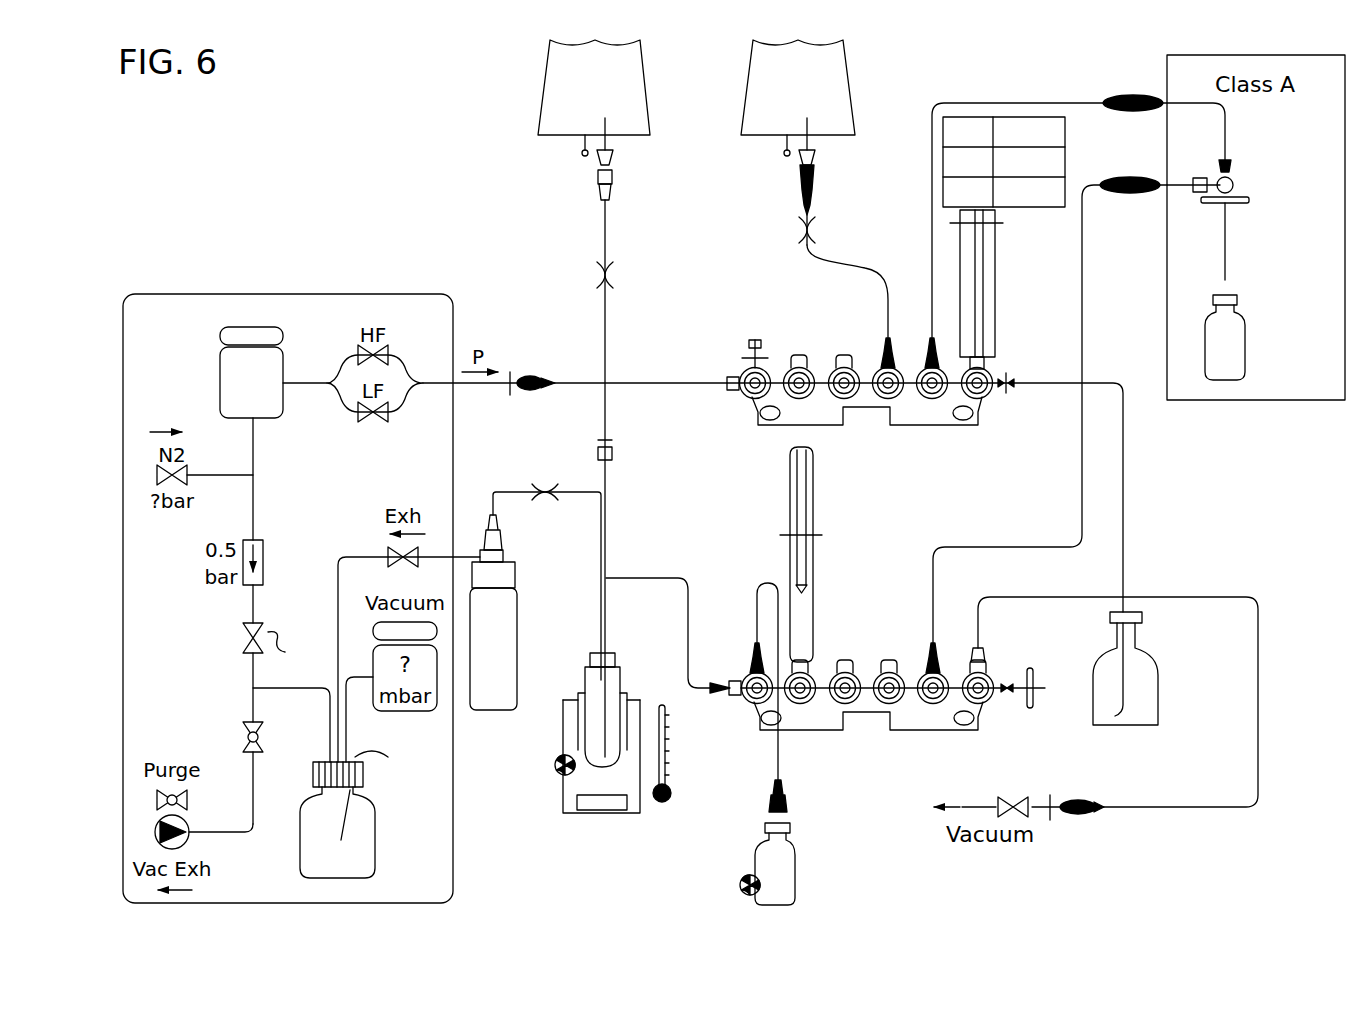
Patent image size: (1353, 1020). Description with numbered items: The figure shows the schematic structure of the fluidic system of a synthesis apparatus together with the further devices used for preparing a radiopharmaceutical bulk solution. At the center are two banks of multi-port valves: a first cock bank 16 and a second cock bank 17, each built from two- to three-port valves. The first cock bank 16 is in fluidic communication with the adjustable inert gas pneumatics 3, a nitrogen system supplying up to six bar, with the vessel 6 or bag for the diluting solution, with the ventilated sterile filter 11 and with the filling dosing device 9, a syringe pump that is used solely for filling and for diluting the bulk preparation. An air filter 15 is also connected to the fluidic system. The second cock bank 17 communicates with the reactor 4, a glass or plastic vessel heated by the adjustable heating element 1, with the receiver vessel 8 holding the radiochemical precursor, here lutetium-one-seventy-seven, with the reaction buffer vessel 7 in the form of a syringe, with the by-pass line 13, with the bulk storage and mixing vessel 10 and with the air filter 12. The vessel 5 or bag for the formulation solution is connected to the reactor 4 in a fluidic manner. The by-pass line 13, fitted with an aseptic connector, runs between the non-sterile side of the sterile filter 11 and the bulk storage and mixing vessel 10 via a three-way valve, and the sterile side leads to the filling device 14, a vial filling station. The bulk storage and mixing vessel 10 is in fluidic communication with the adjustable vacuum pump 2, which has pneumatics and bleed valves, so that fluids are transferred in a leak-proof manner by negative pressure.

The heating element 1 is at (546, 824).
The vacuum pump 2 is at (388, 783).
The inert gas pneumatics 3 is at (275, 442).
The reactor 4 is at (630, 662).
The vessel for a formulation solution 5 is at (634, 180).
The vessel for a diluting solution 6 is at (778, 178).
The reaction buffer vessel 7 is at (836, 574).
The receiver vessel 8 is at (812, 850).
The filling dosing device 9 is at (1008, 292).
The bulk storage and mixing vessel 10 is at (1172, 677).
The ventilated sterile filter 11 is at (1262, 172).
The air filter 12 is at (1036, 722).
The by-pass line 13 is at (1130, 208).
The filling device 14 is at (1252, 278).
The air filter 15 is at (742, 334).
The first cock bank 16 is at (874, 437).
The second cock bank 17 is at (874, 736).